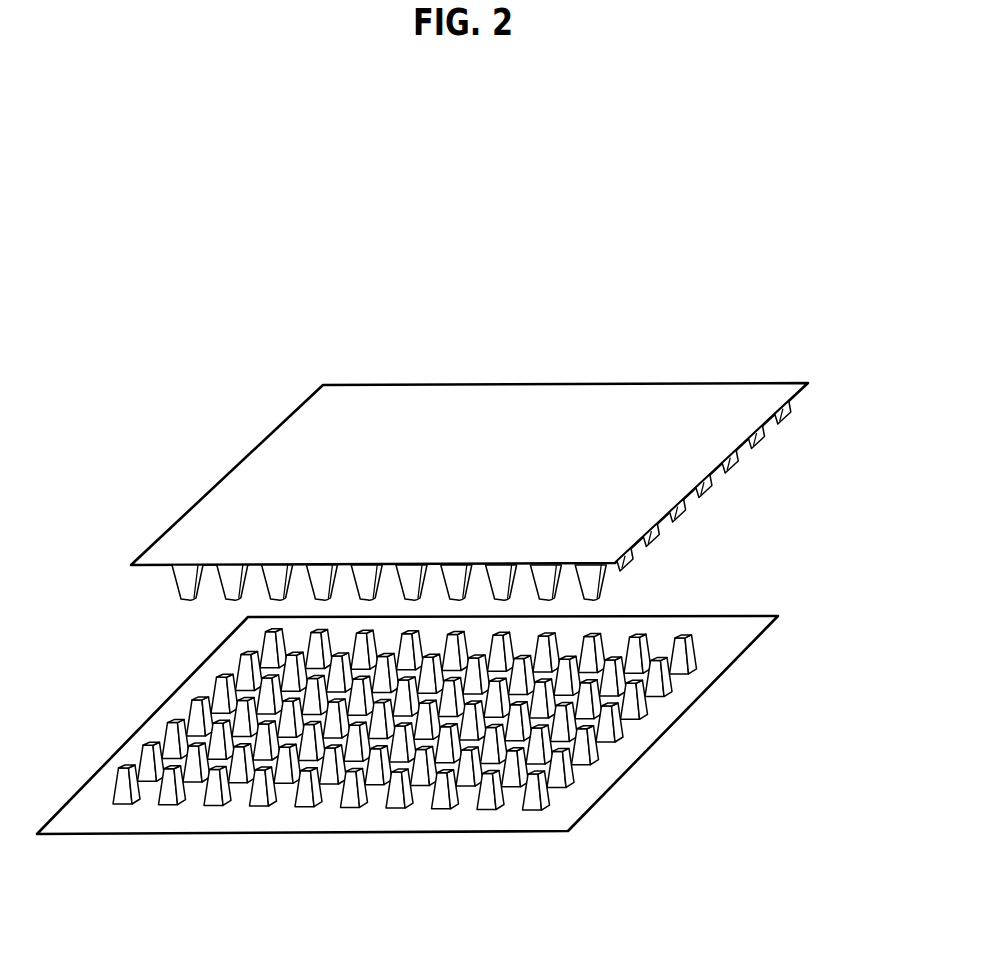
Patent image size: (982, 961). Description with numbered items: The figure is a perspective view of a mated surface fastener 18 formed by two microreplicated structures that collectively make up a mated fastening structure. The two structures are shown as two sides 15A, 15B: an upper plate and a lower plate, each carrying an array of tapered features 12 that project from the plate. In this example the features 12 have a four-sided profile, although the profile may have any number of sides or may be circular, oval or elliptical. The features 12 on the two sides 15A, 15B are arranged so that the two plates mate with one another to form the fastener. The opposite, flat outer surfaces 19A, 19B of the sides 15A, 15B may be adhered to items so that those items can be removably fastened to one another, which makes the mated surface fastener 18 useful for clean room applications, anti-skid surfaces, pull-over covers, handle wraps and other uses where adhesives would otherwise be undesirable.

The mated surface fastener 18 is at (541, 326).
The side 15A is at (225, 475).
The side 15B is at (133, 724).
The outer surface 19A is at (670, 411).
The outer surface 19B is at (429, 846).
The features 12 is at (656, 630).